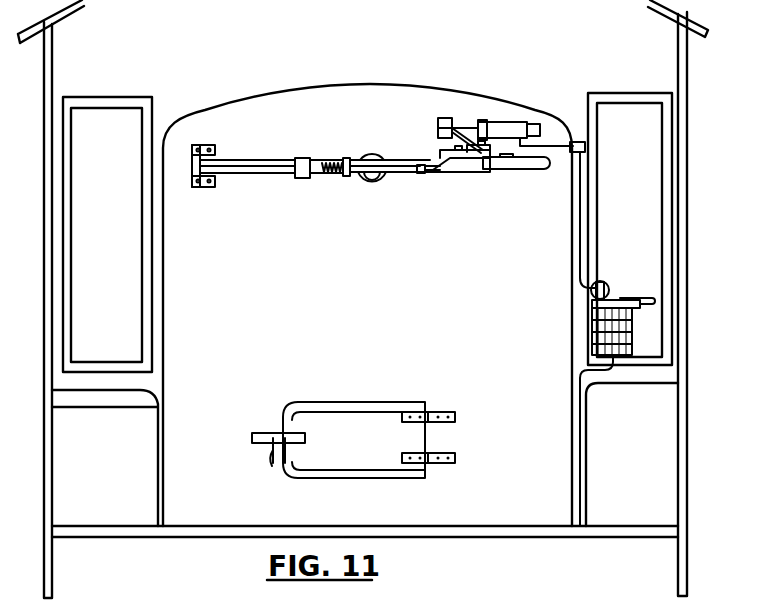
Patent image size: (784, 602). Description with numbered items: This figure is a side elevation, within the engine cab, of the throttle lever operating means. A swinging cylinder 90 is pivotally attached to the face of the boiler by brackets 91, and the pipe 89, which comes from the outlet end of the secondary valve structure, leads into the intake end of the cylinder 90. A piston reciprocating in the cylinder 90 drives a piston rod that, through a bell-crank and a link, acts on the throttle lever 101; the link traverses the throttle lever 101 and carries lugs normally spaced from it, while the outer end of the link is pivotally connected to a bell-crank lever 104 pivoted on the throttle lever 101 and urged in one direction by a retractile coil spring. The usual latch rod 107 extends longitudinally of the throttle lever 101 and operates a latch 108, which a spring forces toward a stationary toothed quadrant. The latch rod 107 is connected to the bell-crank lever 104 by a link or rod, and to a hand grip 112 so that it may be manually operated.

The pipe 89 is at (576, 158).
The swinging cylinder 90 is at (502, 124).
The brackets 91 is at (575, 141).
The throttle lever 101 is at (381, 158).
The bell-crank lever 104 is at (290, 173).
The latch rod 107 is at (407, 172).
The latch 108 is at (313, 176).
The hand grip 112 is at (523, 167).